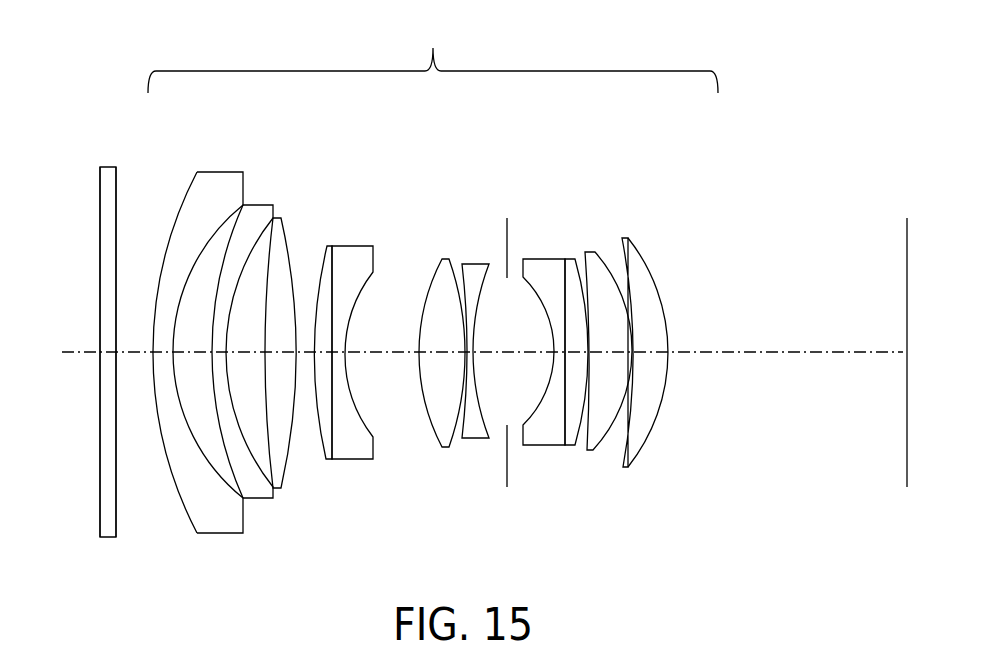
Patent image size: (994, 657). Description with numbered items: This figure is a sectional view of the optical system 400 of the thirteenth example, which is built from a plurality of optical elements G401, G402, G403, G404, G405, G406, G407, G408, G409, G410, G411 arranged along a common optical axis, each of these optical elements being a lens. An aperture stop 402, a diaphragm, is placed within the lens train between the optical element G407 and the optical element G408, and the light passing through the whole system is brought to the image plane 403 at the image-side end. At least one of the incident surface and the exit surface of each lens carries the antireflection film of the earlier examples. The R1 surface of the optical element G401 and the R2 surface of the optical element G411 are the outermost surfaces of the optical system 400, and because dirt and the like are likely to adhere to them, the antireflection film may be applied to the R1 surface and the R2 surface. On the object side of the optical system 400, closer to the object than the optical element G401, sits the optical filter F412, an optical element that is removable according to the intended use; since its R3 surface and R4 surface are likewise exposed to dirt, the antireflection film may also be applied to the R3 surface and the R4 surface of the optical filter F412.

The optical system 400 is at (450, 40).
The optical filter F412 is at (111, 320).
The R1 surface R1 is at (176, 211).
The R2 surface R2 is at (660, 431).
The R3 surface R3 is at (98, 521).
The R4 surface R4 is at (120, 520).
The optical element G401 is at (186, 319).
The optical element G402 is at (254, 212).
The optical element G403 is at (278, 235).
The optical element G404 is at (325, 426).
The optical element G405 is at (354, 445).
The optical element G406 is at (444, 433).
The optical element G407 is at (470, 274).
The aperture stop 402 is at (510, 245).
The optical element G408 is at (540, 440).
The optical element G409 is at (572, 423).
The optical element G410 is at (596, 262).
The optical element G411 is at (672, 332).
The image plane 403 is at (903, 240).